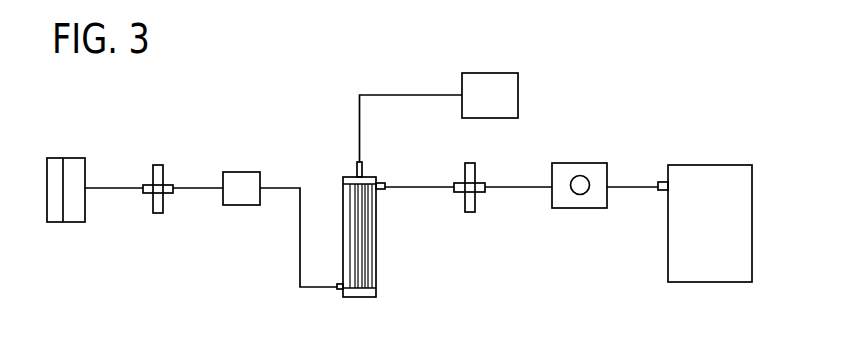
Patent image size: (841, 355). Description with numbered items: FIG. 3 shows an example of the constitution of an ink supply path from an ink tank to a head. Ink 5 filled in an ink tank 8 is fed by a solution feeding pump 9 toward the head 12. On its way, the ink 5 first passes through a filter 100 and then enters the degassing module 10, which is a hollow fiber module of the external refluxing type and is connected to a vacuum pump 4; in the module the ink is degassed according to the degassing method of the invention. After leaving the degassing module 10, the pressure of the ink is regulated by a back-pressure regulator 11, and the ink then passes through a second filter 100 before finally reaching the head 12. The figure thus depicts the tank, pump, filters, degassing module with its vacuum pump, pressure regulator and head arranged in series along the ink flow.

The vacuum pump 4 is at (519, 97).
The ink 5 is at (691, 244).
The ink tank 8 is at (710, 282).
The solution feeding pump 9 is at (578, 208).
The degassing module 10 is at (360, 297).
The back-pressure regulator 11 is at (243, 205).
The head 12 is at (63, 222).
The filter 100 is at (157, 213).